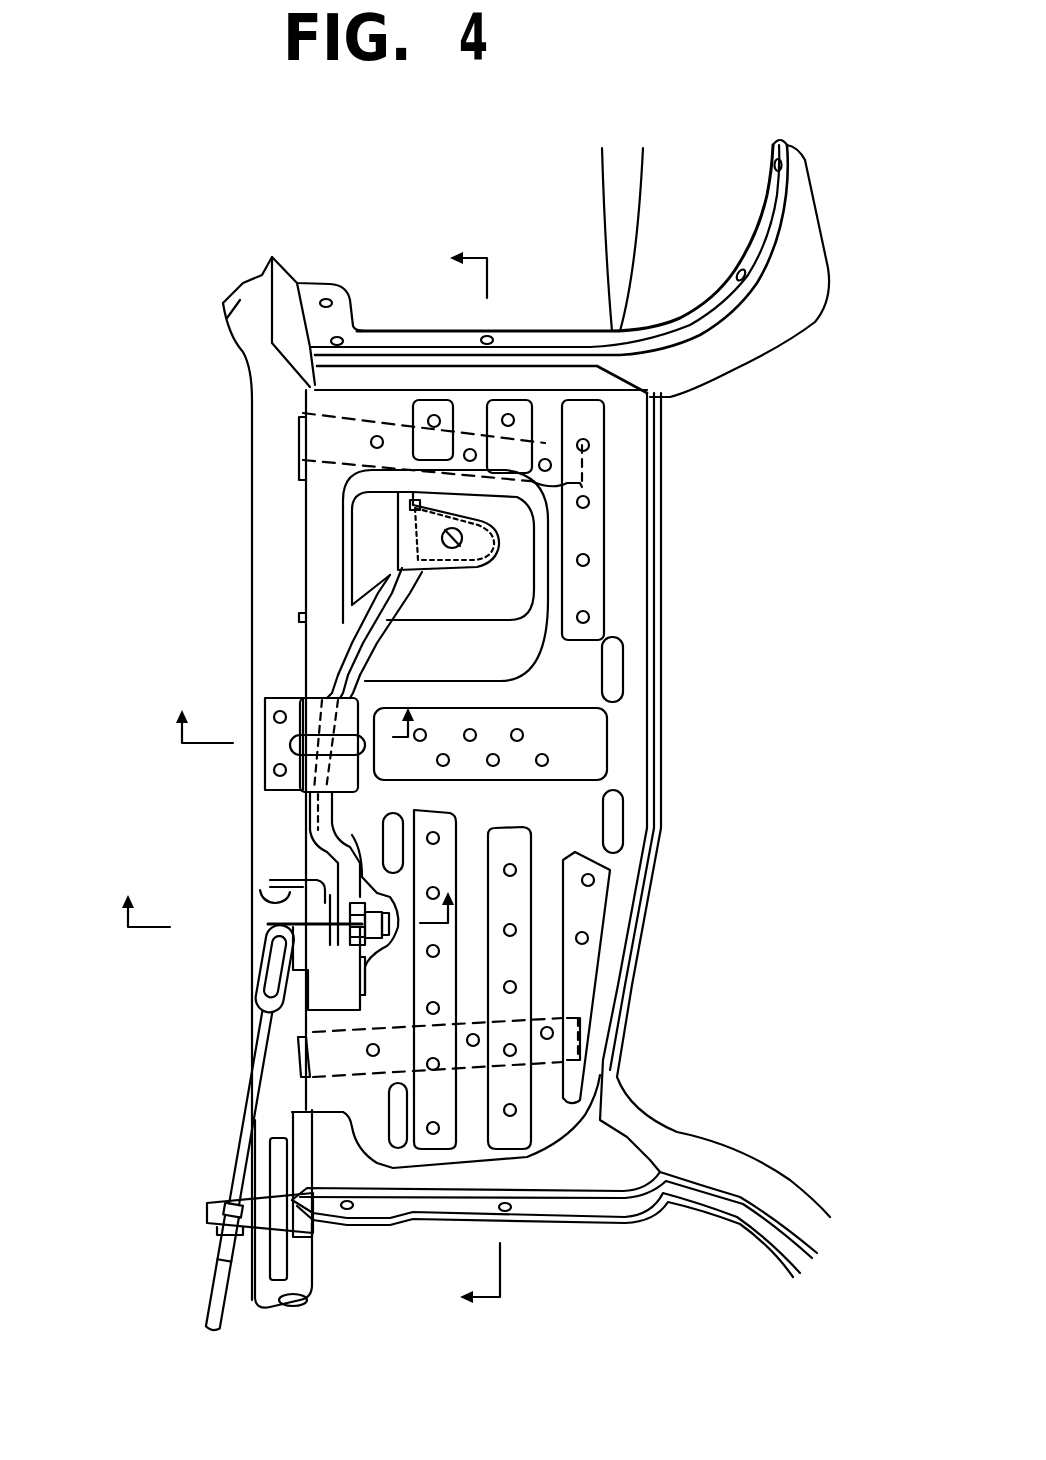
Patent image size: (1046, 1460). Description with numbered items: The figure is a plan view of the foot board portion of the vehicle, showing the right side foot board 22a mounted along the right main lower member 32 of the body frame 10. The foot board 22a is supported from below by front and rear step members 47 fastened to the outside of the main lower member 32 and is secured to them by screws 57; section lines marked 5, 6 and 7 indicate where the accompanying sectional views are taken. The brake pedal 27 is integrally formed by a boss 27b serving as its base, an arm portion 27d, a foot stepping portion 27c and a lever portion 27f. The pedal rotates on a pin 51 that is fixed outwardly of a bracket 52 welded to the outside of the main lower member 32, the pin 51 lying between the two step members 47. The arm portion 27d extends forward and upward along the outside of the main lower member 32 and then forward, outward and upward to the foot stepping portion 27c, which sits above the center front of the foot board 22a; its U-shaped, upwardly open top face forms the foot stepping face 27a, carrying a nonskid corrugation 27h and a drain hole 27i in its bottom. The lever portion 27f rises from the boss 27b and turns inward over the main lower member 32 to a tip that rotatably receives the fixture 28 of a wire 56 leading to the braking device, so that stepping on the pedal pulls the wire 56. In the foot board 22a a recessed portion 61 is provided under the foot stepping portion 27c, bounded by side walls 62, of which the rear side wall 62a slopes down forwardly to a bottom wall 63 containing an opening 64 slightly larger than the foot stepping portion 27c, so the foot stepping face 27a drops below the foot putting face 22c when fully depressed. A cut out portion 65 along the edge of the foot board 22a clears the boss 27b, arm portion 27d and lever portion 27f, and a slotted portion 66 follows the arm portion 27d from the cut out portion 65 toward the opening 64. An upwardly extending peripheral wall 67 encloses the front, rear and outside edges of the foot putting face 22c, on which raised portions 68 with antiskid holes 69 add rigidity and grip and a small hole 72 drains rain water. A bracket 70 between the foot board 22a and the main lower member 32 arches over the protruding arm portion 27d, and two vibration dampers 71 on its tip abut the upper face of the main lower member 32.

The body frame 10 is at (251, 481).
The foot board 22a is at (660, 777).
The foot putting face 22c is at (550, 697).
The brake pedal 27 is at (351, 640).
The foot stepping face 27a is at (462, 527).
The boss 27b is at (328, 885).
The foot stepping portion 27c is at (400, 540).
The arm portion 27d is at (317, 806).
The lever portion 27f is at (315, 926).
The nonskid corrugation 27h is at (412, 498).
The drain hole 27i is at (415, 510).
The fixture 28 is at (264, 1002).
The main lower member 32 is at (275, 646).
The step member 47 is at (500, 516).
The pin 51 is at (375, 955).
The bracket 52 is at (270, 883).
The wire 56 is at (250, 1115).
The screw 57 is at (476, 454).
The recessed portion 61 is at (517, 598).
The side wall 62 is at (543, 577).
The rear side wall 62a is at (520, 650).
The bottom wall 63 is at (530, 547).
The opening 64 is at (589, 502).
The cut out portion 65 is at (333, 693).
The slotted portion 66 is at (377, 583).
The peripheral wall 67 is at (650, 933).
The raised portion 68 is at (580, 740).
The antiskid hole 69 is at (594, 880).
The bracket 70 is at (262, 787).
The vibration damper 71 is at (302, 785).
The small hole 72 is at (617, 827).
The section line 5 is at (491, 776).
The section line 6- 6 is at (267, 928).
The section line 7 is at (284, 746).